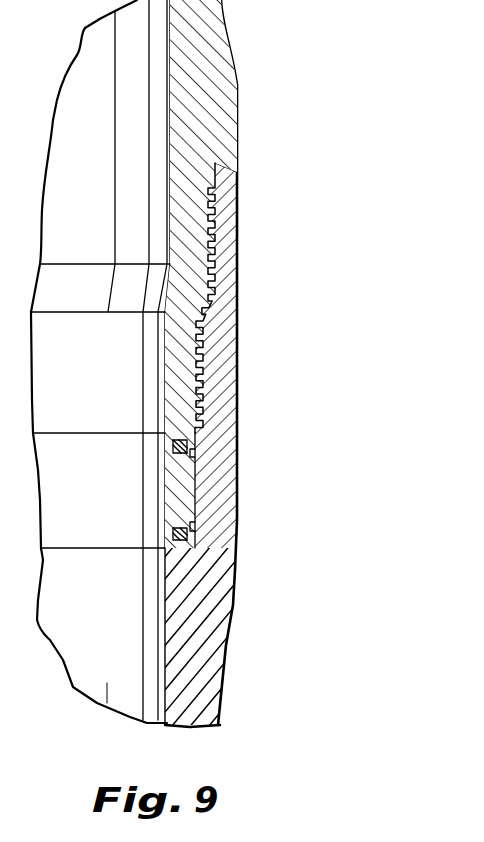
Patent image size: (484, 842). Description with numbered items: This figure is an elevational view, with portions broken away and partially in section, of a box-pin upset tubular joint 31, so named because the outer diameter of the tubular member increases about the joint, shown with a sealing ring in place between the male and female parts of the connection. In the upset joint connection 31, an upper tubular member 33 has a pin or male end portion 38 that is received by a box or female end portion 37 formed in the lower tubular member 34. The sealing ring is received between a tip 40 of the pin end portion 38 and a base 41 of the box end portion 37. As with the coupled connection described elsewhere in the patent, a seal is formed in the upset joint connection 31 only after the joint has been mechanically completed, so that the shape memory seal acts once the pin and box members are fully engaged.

The box-pin upset tubular joint 31 is at (261, 202).
The upper tubular member 33 is at (217, 52).
The lower tubular member 34 is at (207, 692).
The box end portion 37 is at (228, 342).
The pin end portion 38 is at (210, 257).
The tip of the pin end portion 40 is at (195, 472).
The base of the box end portion 41 is at (195, 528).